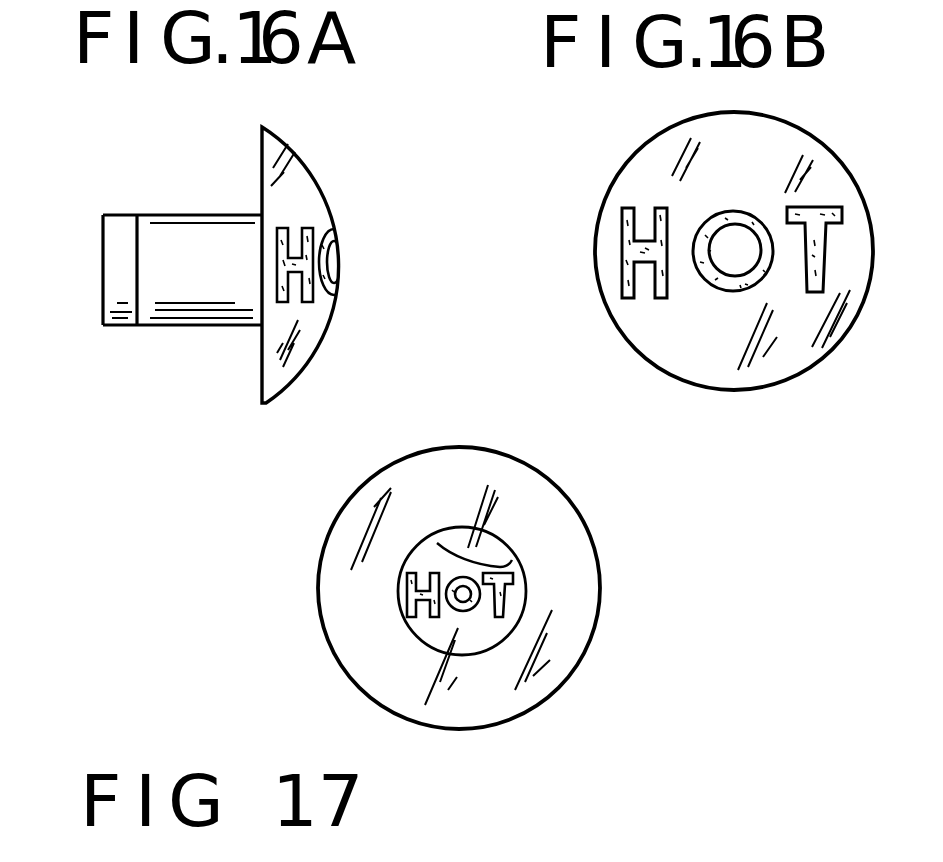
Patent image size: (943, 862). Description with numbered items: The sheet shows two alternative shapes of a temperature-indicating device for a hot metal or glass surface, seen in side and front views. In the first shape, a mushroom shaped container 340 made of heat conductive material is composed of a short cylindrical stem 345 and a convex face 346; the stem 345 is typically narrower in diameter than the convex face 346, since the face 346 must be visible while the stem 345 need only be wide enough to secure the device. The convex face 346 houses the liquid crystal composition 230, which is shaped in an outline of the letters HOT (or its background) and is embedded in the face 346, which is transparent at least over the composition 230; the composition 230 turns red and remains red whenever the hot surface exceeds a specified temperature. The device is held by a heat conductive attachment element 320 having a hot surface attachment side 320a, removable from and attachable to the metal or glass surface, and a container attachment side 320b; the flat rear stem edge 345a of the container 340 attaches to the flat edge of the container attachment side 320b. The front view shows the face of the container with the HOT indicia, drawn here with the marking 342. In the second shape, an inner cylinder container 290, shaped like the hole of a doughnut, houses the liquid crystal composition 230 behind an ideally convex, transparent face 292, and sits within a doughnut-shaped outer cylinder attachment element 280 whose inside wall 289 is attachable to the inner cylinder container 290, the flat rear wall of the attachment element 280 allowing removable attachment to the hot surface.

In FIG. 16A, the attachment element 320 is at (121, 241).
In FIG. 16A, the hot surface attachment side 320a is at (107, 302).
In FIG. 16A, the container attachment side 320b is at (136, 254).
In FIG. 16A, the stem 345 is at (188, 233).
In FIG. 16A, the rear stem edge 345a is at (138, 268).
In FIG. 16A, the mushroom shaped container 340 is at (298, 181).
In FIG. 16A, the convex face 346 is at (320, 188).
In FIG. 16B, the cap face 342 is at (670, 337).
In FIG. 16B, the liquid crystal composition 230 is at (710, 218).
In FIG. 17, the outer cylinder attachment element 280 is at (573, 648).
In FIG. 17, the inside wall 289 is at (525, 603).
In FIG. 17, the inner cylinder container 290 is at (496, 562).
In FIG. 17, the face 292 is at (523, 567).